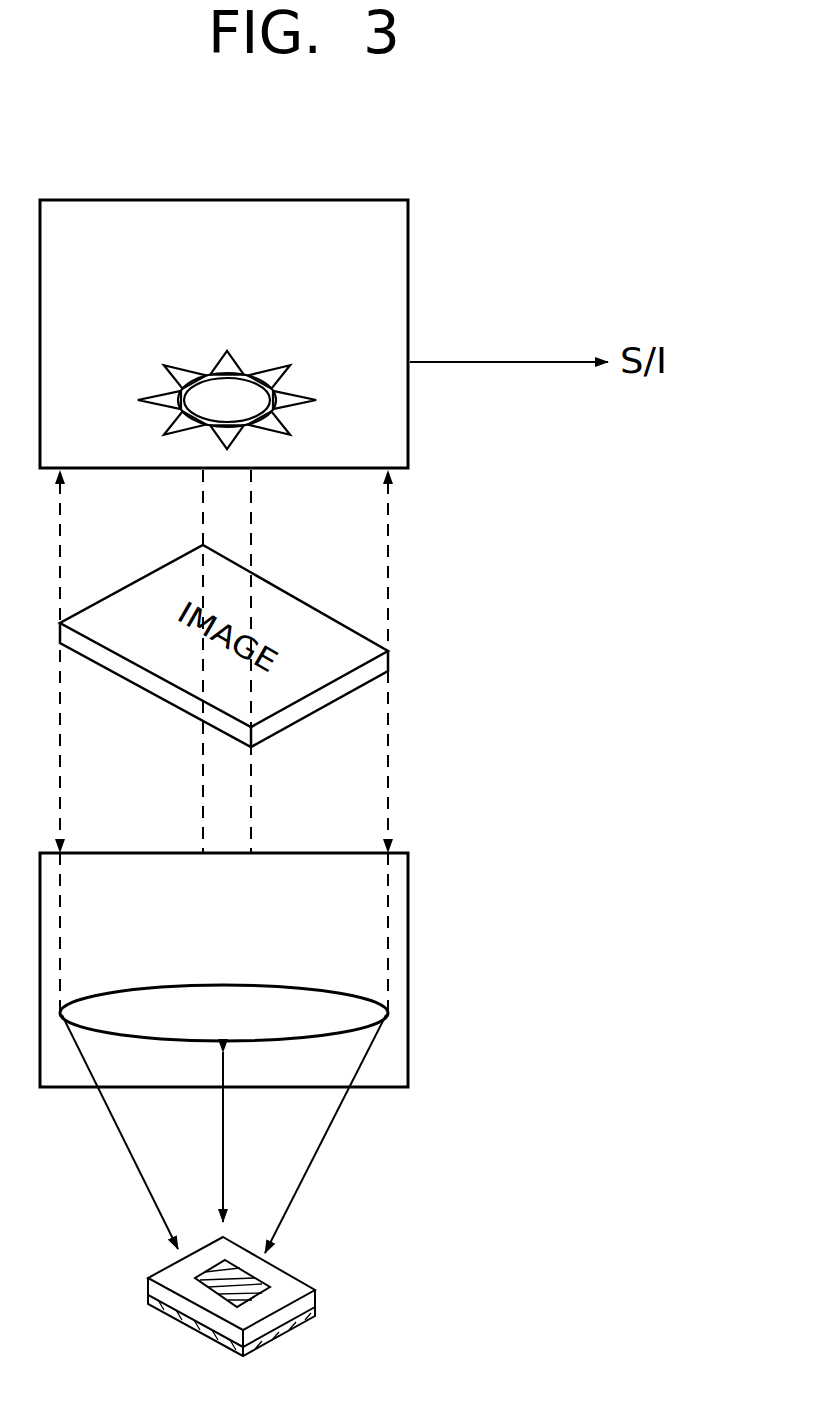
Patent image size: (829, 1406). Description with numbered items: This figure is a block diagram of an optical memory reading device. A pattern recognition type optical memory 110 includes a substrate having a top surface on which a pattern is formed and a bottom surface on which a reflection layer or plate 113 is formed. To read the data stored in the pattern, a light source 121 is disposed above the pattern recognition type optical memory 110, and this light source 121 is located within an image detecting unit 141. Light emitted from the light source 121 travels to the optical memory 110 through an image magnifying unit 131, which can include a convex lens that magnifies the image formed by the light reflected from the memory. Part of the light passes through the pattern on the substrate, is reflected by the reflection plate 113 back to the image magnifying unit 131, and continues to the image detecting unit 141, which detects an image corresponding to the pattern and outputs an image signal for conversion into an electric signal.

The image detecting unit 141 is at (230, 198).
The light source 121 is at (290, 390).
The image magnifying unit 131 is at (410, 988).
The pattern recognition type optical memory 110 is at (315, 1290).
The reflection layer or plate 113 is at (317, 1315).